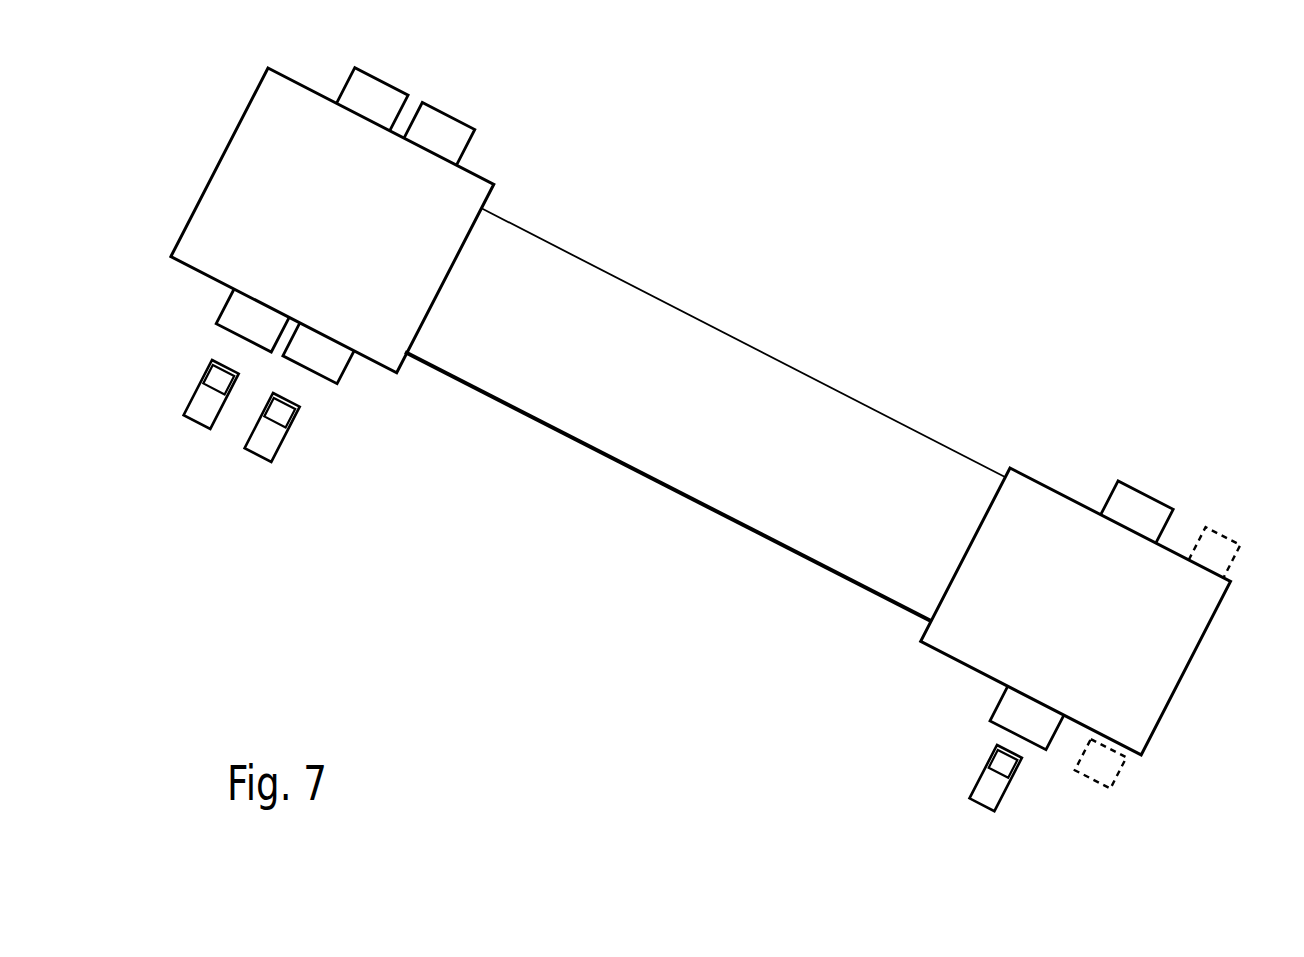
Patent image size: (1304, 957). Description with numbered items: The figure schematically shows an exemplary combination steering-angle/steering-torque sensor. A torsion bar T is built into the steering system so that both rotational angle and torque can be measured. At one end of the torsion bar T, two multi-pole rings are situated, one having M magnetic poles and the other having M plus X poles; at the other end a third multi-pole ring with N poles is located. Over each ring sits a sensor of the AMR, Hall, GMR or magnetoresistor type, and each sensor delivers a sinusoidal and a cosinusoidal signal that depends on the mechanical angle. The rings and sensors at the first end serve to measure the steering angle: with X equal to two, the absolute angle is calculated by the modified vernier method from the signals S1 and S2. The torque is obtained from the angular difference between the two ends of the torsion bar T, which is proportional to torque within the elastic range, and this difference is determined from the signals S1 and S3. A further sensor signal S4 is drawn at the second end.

The torsion bar T is at (775, 377).
The multi-pole ring with M magnetic poles M is at (377, 90).
The sensor signal S1 is at (190, 420).
The sensor signal S2 is at (262, 450).
The sensor signal S3 is at (982, 788).
The sensor 4 (optional) S4 is at (1090, 775).